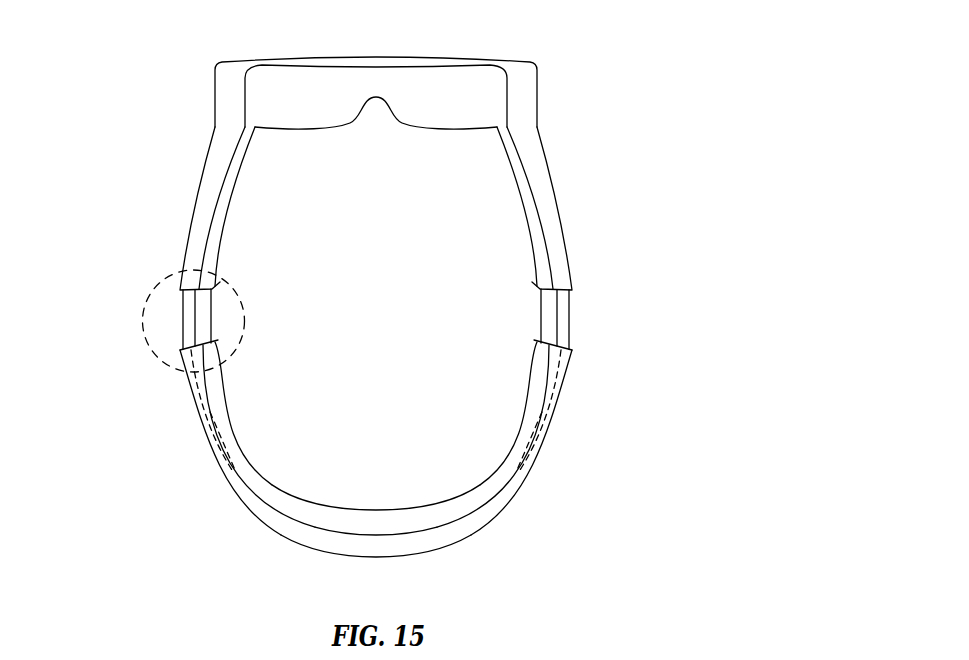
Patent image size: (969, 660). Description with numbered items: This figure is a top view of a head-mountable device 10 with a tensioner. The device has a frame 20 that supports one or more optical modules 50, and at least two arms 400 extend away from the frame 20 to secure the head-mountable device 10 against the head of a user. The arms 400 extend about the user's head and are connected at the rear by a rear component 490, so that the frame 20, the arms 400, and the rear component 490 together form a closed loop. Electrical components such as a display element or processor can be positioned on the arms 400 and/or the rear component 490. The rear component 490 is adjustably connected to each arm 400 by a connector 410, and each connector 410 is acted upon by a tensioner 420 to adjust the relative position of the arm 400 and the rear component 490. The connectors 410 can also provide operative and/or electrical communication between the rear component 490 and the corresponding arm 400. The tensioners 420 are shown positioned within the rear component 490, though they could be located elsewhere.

The head-mountable device 10 is at (112, 55).
The frame 20 is at (510, 77).
The optical module 50 is at (305, 92).
The arm 400 is at (206, 161).
The connector 410 is at (173, 307).
The tensioner 420 is at (200, 447).
The rear component 490 is at (387, 557).